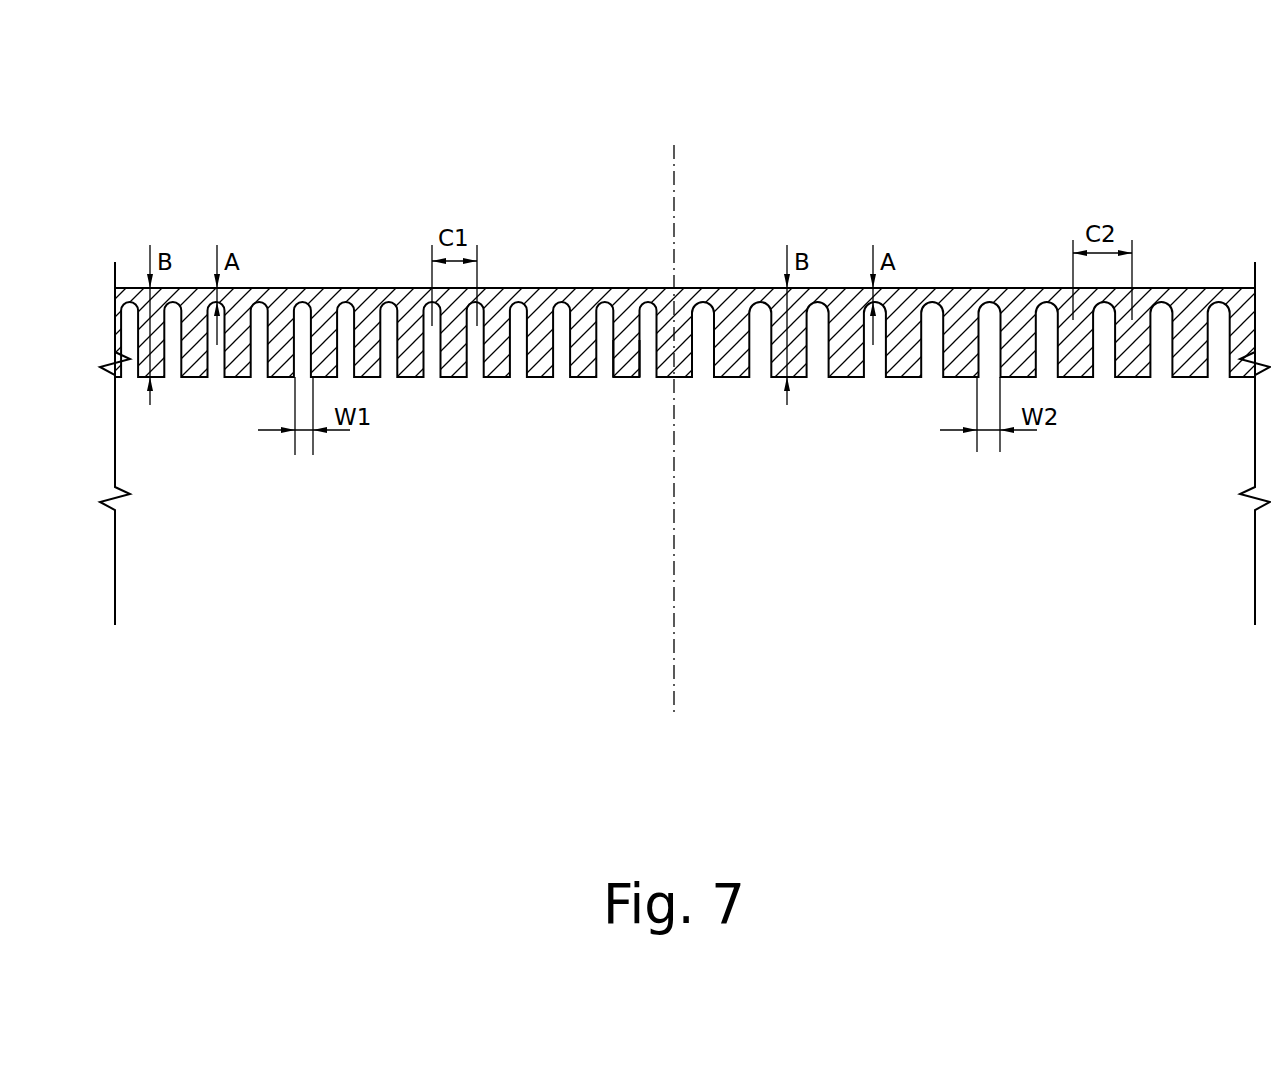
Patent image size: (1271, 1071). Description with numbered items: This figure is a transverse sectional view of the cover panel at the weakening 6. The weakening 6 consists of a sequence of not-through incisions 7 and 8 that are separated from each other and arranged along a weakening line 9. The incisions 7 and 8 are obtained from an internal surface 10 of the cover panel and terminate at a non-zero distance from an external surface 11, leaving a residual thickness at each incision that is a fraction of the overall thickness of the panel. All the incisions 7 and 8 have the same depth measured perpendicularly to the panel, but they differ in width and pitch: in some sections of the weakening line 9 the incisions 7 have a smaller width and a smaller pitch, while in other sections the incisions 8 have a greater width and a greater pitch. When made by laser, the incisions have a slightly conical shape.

The weakening 6 is at (1118, 113).
The incisions 7 is at (518, 391).
The incisions 8 is at (1165, 392).
The weakening line 9 is at (326, 644).
The internal surface 10 is at (632, 392).
The external surface 11 is at (328, 276).